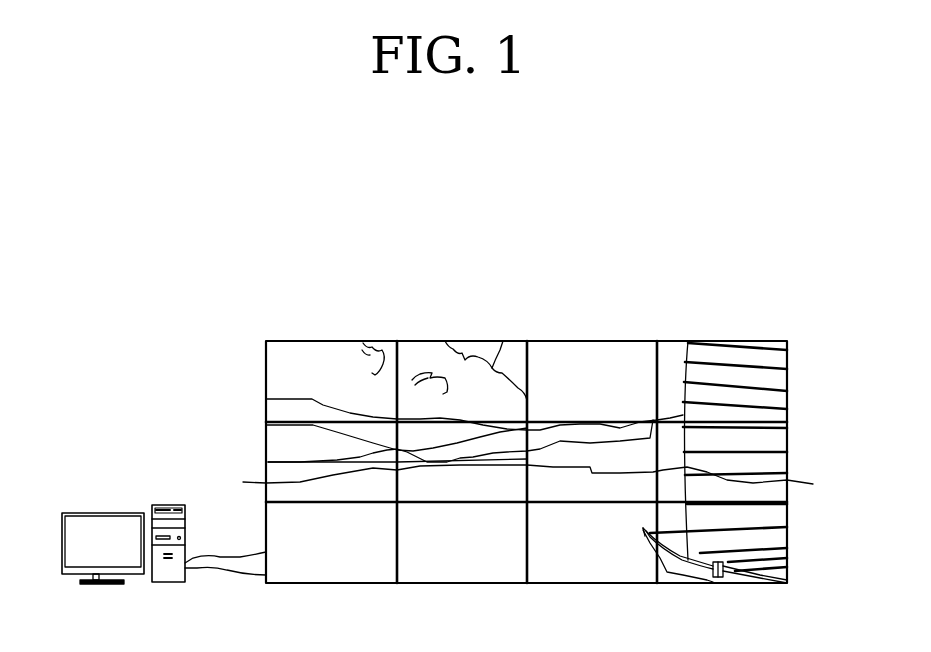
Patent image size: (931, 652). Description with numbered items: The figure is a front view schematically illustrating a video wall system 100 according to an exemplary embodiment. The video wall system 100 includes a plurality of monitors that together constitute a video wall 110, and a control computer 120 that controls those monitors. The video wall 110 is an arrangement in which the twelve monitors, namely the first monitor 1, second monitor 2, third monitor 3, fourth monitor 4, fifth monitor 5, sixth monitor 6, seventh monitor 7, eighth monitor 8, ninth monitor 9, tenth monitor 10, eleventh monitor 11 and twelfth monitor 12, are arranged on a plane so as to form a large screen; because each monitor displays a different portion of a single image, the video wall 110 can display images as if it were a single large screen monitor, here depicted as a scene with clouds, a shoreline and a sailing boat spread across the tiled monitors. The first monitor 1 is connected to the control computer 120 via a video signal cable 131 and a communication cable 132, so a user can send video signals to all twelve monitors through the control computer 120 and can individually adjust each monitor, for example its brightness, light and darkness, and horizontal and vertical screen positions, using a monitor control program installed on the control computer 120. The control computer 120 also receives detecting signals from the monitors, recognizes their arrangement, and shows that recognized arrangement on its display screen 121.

The video wall system 100 is at (478, 236).
The video wall 110 is at (271, 333).
The first monitor 1 is at (311, 583).
The second monitor 2 is at (266, 446).
The third monitor 3 is at (332, 341).
The fourth monitor 4 is at (456, 341).
The fifth monitor 5 is at (266, 483).
The sixth monitor 6 is at (448, 583).
The seventh monitor 7 is at (560, 583).
The eighth monitor 8 is at (787, 480).
The ninth monitor 9 is at (570, 341).
The tenth monitor 10 is at (712, 341).
The eleventh monitor 11 is at (789, 446).
The twelfth monitor 12 is at (703, 583).
The control computer 120 is at (153, 497).
The display screen 121 is at (78, 520).
The video signal cable 131 is at (214, 553).
The communication cable 132 is at (211, 575).